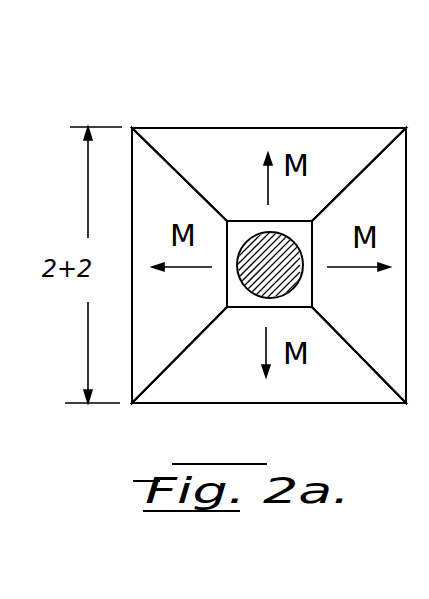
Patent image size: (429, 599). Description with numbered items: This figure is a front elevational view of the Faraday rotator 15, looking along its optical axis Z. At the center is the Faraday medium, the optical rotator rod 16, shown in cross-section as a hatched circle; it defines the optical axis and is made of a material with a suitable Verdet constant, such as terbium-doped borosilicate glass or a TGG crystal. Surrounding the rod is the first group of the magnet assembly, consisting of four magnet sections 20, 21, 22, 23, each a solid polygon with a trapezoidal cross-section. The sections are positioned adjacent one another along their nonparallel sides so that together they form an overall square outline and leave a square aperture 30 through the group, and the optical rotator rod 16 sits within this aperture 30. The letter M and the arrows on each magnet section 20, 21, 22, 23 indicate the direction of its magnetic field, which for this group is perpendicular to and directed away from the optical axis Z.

The Faraday rotator 15 is at (214, 92).
The optical rotator rod 16 is at (292, 273).
The magnet section 20 is at (185, 163).
The magnet section 21 is at (348, 210).
The magnet section 22 is at (185, 387).
The magnet section 23 is at (143, 318).
The aperture 30 is at (237, 303).